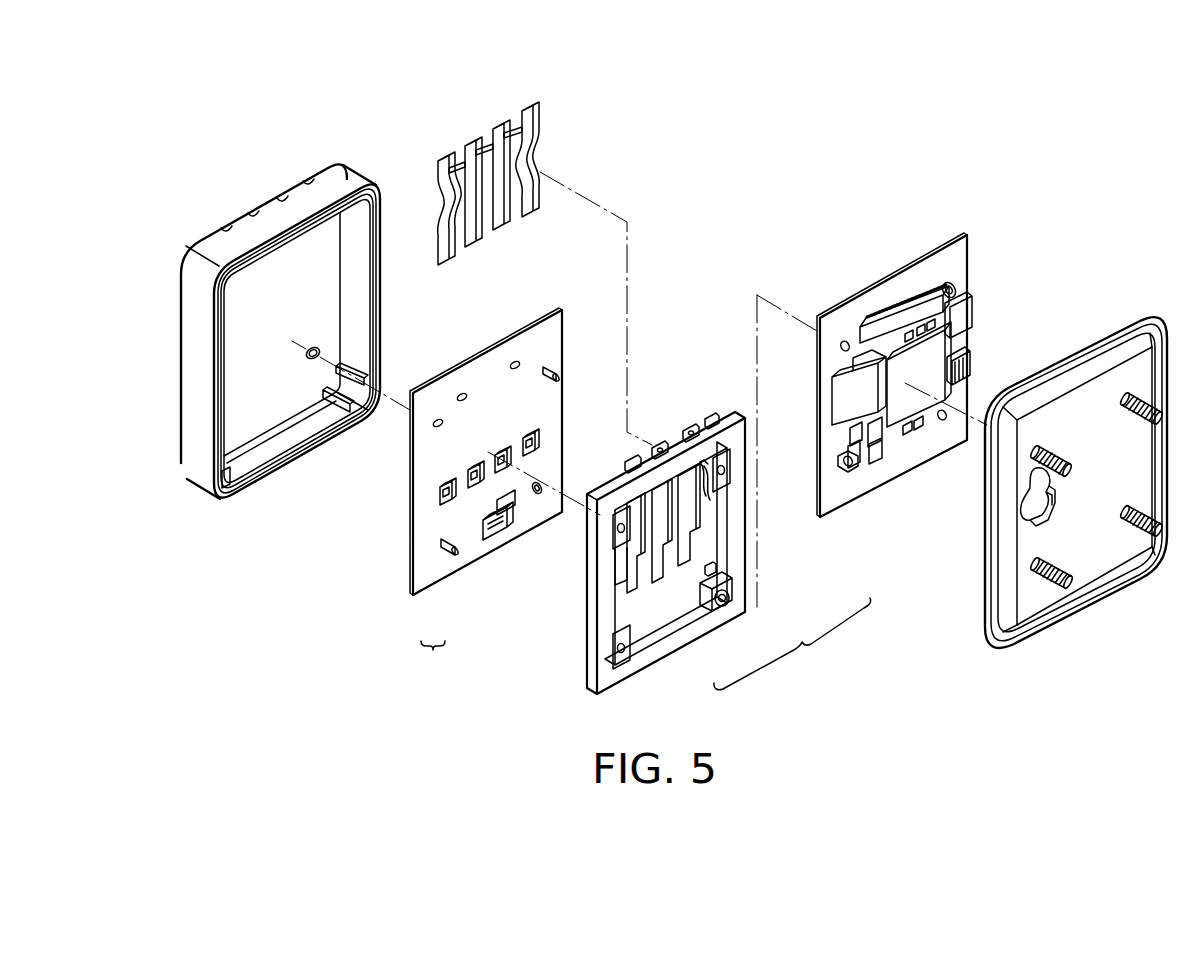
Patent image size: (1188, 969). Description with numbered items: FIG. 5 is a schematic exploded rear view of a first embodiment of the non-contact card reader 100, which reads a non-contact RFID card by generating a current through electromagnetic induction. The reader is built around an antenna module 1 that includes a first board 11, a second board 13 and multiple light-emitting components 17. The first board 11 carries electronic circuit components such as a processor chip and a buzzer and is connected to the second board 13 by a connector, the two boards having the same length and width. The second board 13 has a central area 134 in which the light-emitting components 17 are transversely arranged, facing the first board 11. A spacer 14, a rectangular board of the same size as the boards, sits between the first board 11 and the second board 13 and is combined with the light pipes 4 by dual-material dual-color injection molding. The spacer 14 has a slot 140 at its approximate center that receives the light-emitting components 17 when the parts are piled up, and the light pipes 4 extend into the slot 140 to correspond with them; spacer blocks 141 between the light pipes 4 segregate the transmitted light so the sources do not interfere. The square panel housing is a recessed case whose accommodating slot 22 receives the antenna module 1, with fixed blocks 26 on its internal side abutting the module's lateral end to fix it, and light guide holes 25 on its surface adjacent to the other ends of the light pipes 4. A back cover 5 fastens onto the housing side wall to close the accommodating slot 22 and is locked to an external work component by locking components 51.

The non-contact card reader 100 is at (157, 84).
The accommodating slot 22 is at (278, 400).
The light guide holes 25 is at (228, 226).
The fixed blocks 26 is at (230, 488).
The light pipes 4 is at (470, 250).
The second board 13 is at (427, 563).
The central area 134 is at (466, 436).
The light-emitting components 17 is at (476, 488).
The slot 140 is at (633, 605).
The spacer blocks 141 is at (640, 517).
The spacer 14 is at (714, 618).
The first board 11 is at (840, 497).
The back cover 5 is at (1076, 360).
The locking components 51 is at (1125, 392).
The antenna module 1 is at (646, 644).